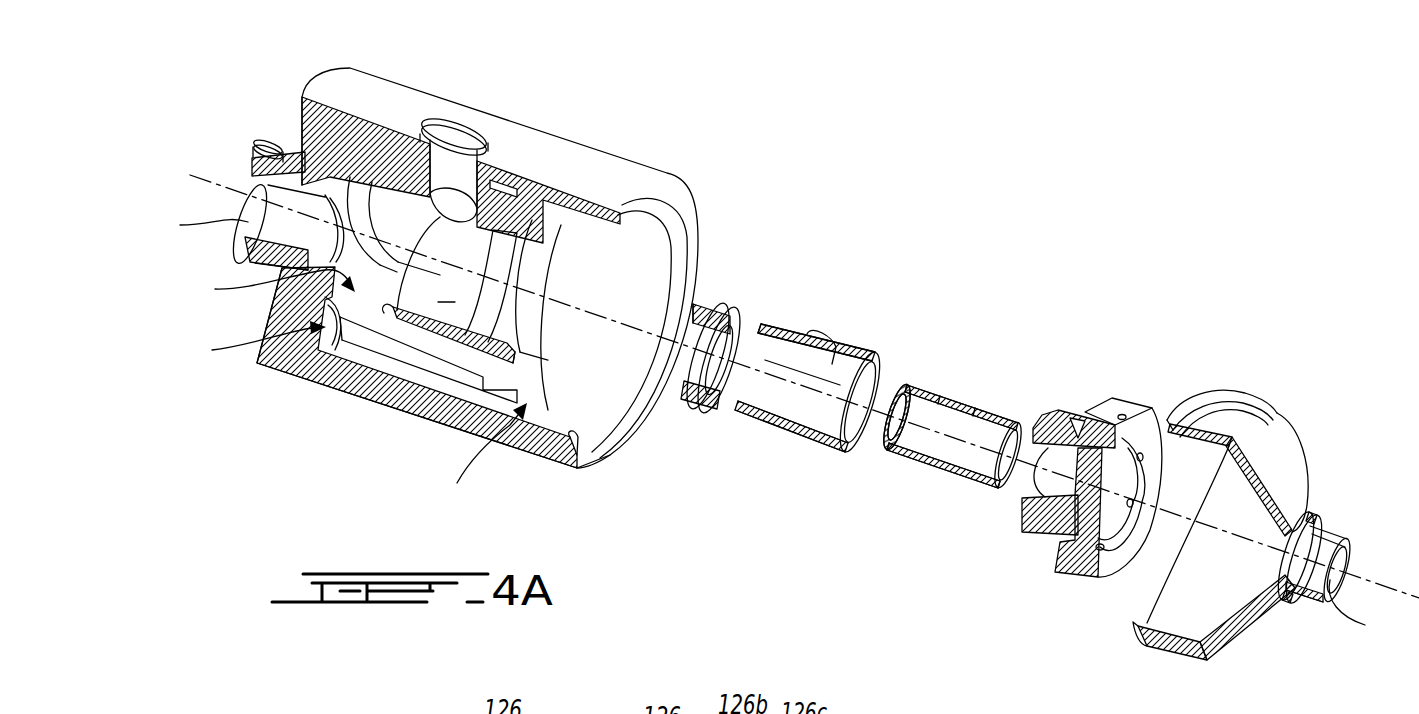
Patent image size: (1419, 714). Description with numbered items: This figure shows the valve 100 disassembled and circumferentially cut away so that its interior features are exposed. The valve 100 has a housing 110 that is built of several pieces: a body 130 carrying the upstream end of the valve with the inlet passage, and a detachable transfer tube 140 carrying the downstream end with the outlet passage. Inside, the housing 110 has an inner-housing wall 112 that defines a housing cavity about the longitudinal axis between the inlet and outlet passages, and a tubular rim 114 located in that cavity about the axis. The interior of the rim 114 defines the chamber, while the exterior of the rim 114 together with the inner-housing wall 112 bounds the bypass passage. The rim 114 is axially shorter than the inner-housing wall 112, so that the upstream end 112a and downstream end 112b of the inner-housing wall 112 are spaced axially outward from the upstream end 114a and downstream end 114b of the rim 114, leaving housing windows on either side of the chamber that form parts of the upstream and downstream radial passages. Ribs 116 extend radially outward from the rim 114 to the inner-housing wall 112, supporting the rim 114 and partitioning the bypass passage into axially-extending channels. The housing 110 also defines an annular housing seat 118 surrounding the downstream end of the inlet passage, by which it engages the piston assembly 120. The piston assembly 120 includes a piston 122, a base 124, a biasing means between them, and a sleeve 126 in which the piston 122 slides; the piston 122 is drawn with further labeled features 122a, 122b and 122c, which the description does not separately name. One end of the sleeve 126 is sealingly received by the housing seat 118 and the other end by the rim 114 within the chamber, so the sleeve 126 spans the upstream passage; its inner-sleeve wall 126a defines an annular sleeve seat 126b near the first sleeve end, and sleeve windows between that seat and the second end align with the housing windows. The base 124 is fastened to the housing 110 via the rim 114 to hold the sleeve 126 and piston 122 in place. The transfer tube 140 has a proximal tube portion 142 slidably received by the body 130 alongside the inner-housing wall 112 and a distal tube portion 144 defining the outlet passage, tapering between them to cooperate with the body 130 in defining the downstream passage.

The valve 100 is at (1283, 175).
The housing 110 is at (606, 103).
The body 130 is at (461, 311).
The inner-housing wall 112 is at (401, 387).
The upstream end of the inner-housing wall 112a is at (322, 383).
The downstream end of the inner-housing wall 112b is at (577, 440).
The tubular rim 114 is at (560, 260).
The upstream end of the rim 114a is at (355, 350).
The downstream end of the rim 114b is at (557, 367).
The rib 116 is at (548, 332).
The annular housing seat 118 is at (320, 207).
The piston assembly 120 is at (1016, 238).
The piston 122 is at (960, 398).
The sleeve first end 122a is at (880, 445).
The sleeve second end 122b is at (992, 475).
The sleeve groove 122c is at (912, 393).
The base 124 is at (1123, 414).
The sleeve 126 is at (787, 333).
The inner-sleeve wall 126a is at (832, 415).
The annular sleeve seat 126b is at (733, 397).
The transfer tube 140 is at (1347, 375).
The proximal tube portion 142 is at (1232, 406).
The distal tube portion 144 is at (1337, 527).